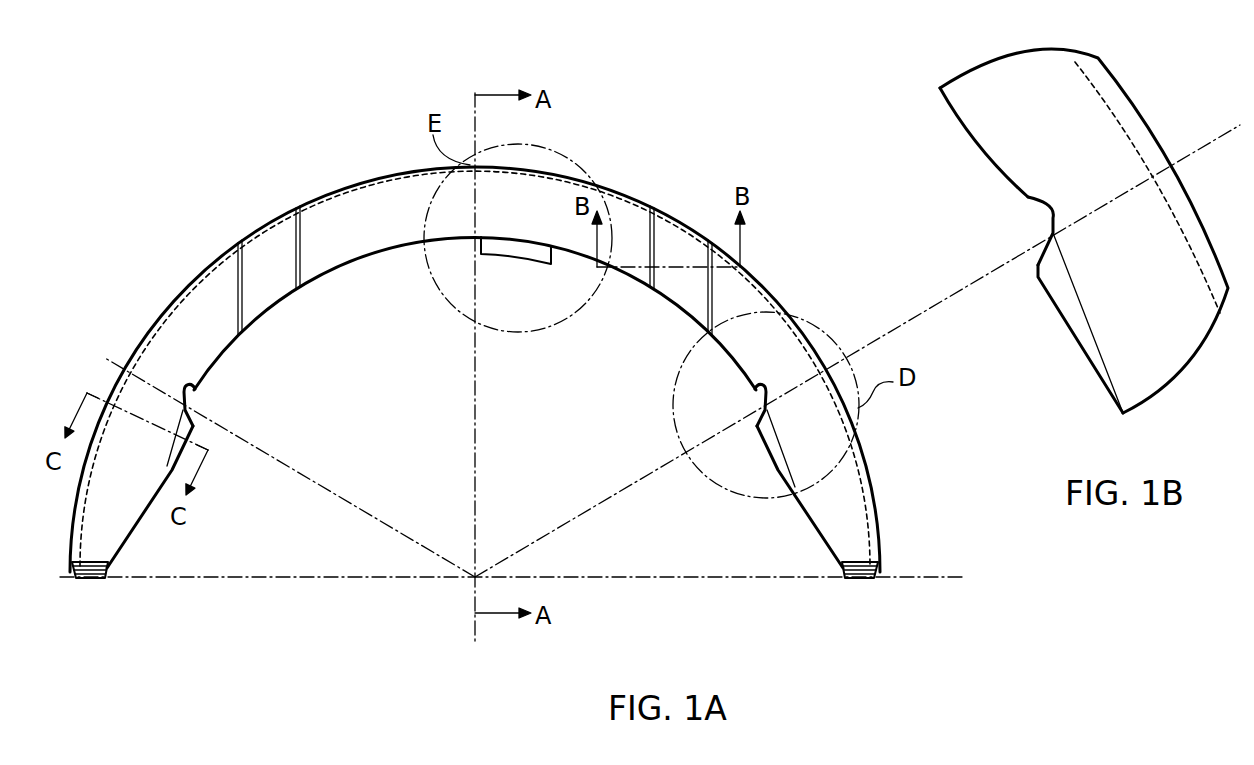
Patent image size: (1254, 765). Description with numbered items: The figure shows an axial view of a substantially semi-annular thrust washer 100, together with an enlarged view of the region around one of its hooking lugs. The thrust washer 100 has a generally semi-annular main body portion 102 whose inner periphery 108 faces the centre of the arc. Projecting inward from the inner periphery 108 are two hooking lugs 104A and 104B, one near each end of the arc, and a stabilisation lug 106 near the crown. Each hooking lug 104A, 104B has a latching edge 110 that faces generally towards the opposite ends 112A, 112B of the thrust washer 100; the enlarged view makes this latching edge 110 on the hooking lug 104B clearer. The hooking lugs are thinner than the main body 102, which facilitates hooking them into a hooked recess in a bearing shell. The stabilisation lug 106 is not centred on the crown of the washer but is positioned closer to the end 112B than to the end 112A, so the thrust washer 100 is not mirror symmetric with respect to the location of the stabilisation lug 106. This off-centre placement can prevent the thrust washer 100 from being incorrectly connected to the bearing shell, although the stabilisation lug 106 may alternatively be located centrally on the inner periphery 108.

In FIG. 1A, the thrust washer 100 is at (160, 119).
In FIG. 1A, the main body portion 102 is at (475, 369).
In FIG. 1B, the main body portion 102 is at (1084, 231).
In FIG. 1A, the hooking lug 104A is at (168, 472).
In FIG. 1A, the hooking lug 104B is at (780, 462).
In FIG. 1B, the hooking lug 104B is at (1082, 348).
In FIG. 1A, the stabilisation lug 106 is at (523, 250).
In FIG. 1A, the inner periphery 108 is at (335, 268).
In FIG. 1B, the inner periphery 108 is at (960, 110).
In FIG. 1A, the latching edge 110 is at (197, 415).
In FIG. 1B, the latching edge 110 is at (1040, 258).
In FIG. 1A, the end of thrust washer 112A is at (90, 580).
In FIG. 1A, the end of thrust washer 112B is at (855, 578).